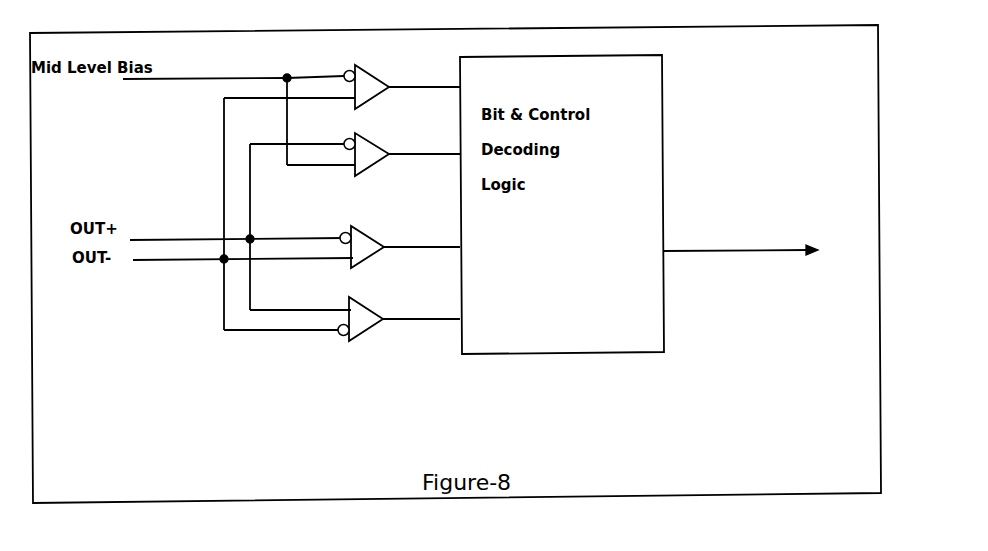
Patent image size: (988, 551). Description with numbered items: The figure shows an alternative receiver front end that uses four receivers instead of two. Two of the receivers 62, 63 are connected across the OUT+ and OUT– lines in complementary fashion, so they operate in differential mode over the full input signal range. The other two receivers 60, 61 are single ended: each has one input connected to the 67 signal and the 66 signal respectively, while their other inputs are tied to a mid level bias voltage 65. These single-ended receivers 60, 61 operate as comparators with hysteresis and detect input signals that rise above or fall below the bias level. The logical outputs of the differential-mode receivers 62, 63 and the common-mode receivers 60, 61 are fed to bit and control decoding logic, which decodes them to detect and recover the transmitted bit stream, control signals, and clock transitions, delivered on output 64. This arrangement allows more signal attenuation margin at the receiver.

The receiver 60 is at (402, 73).
The receiver 61 is at (402, 147).
The receiver 62 is at (400, 240).
The receiver 63 is at (399, 314).
The output Q[0] 64 is at (705, 244).
The mid level bias input 65 is at (239, 72).
The signal 66 is at (163, 234).
The signal 67 is at (173, 266).